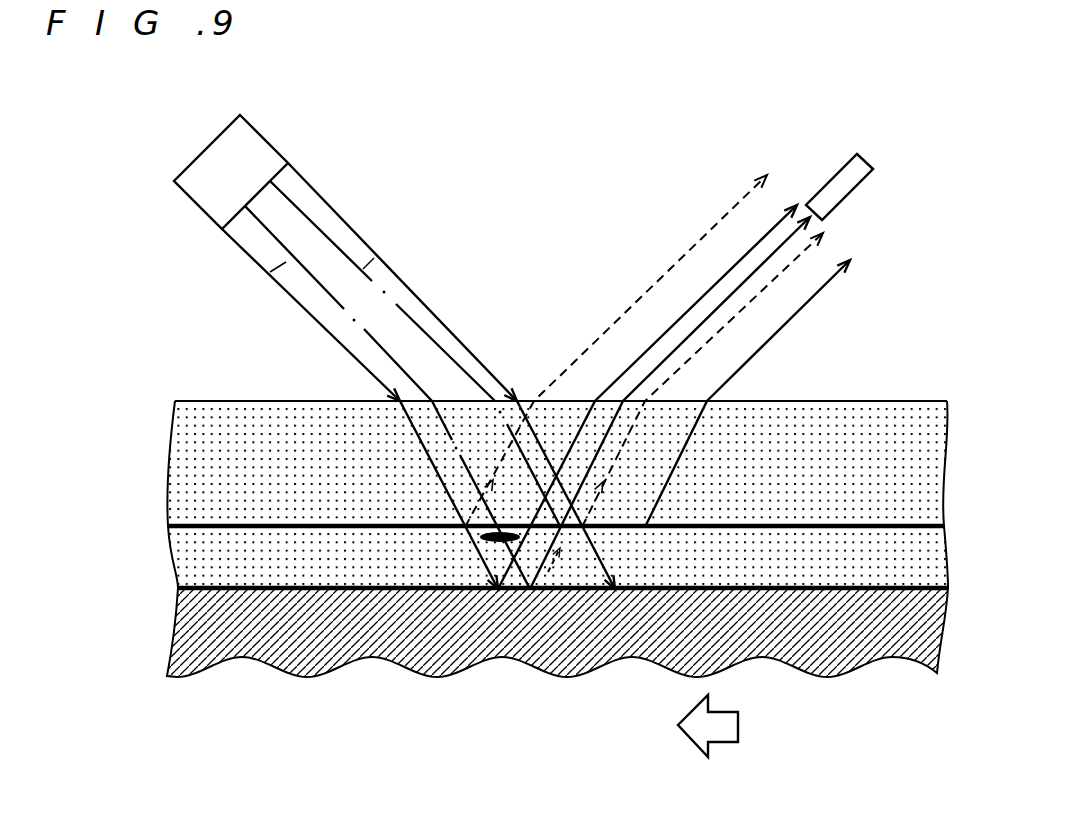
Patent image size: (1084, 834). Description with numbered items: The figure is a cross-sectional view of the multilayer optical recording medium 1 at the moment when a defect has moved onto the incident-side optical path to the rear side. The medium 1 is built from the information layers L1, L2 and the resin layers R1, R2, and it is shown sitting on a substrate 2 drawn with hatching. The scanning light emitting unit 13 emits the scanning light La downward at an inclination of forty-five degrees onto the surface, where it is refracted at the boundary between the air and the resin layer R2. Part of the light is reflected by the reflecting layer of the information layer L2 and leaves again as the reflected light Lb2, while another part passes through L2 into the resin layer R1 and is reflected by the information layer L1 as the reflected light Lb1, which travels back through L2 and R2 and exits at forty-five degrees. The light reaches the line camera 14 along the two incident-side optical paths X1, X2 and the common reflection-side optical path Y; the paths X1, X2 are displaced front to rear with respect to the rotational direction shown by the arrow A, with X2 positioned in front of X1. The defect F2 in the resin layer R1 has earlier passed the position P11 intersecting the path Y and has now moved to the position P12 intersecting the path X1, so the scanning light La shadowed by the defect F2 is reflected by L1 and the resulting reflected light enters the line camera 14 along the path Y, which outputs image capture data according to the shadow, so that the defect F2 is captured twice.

The multilayer optical recording medium 1 is at (518, 473).
The substrate 2 is at (180, 637).
The scanning light emitting unit 13 is at (273, 150).
The line camera 14 is at (843, 165).
The scanning light La is at (407, 377).
The incident-side optical path X1 is at (270, 274).
The incident-side optical path X2 is at (376, 262).
The reflection-side optical path Y is at (742, 280).
The reflected light Lb1 is at (751, 331).
The reflected light Lb2 is at (606, 348).
The resin layer R1 is at (178, 562).
The resin layer R2 is at (173, 457).
The information layer L1 is at (176, 588).
The information layer L2 is at (168, 526).
The position P11 is at (553, 592).
The position P12 is at (473, 588).
The defect F2 is at (560, 530).
The arrow A is at (724, 726).